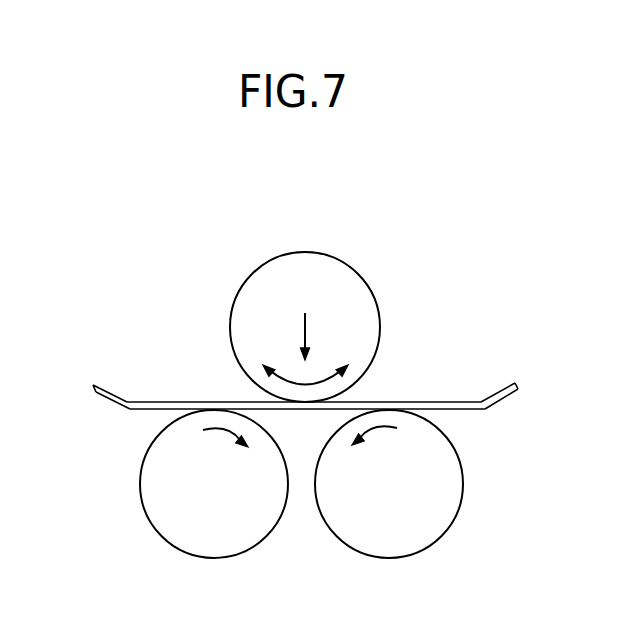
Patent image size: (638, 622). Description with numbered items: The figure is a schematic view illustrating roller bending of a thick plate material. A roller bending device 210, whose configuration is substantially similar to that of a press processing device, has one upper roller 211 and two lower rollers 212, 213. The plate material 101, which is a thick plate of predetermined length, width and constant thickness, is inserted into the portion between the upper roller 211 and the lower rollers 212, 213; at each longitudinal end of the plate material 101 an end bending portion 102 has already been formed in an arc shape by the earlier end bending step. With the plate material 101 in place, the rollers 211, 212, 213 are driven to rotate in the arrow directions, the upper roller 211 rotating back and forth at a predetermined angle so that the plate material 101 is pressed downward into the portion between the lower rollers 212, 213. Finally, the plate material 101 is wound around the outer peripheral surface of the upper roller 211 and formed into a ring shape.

The roller bending device 210 is at (108, 302).
The upper roller 211 is at (302, 277).
The lower roller 212 is at (192, 482).
The lower roller 213 is at (412, 482).
The plate material 101 is at (450, 402).
The end bending portion 102 is at (95, 383).